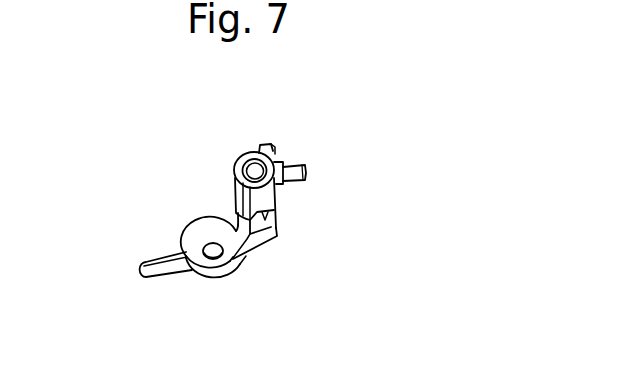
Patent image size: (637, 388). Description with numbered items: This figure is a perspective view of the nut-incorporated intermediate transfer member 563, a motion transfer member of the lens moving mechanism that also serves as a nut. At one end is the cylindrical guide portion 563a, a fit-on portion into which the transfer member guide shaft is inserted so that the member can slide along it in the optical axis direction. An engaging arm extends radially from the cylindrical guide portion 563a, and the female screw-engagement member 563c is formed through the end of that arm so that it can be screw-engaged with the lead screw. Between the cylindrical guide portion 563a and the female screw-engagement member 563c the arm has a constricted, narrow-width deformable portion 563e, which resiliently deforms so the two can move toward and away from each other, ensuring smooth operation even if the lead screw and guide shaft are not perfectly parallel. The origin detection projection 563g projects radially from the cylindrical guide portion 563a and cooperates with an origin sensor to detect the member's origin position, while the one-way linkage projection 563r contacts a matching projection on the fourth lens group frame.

The nut-incorporated intermediate transfer member 563 is at (184, 196).
The cylindrical guide portion 563a is at (240, 152).
The one-way linkage projection 563r is at (270, 147).
The origin detection projection 563g is at (302, 183).
The deformable portion 563e is at (270, 238).
The female screw-engagement member 563c is at (216, 259).